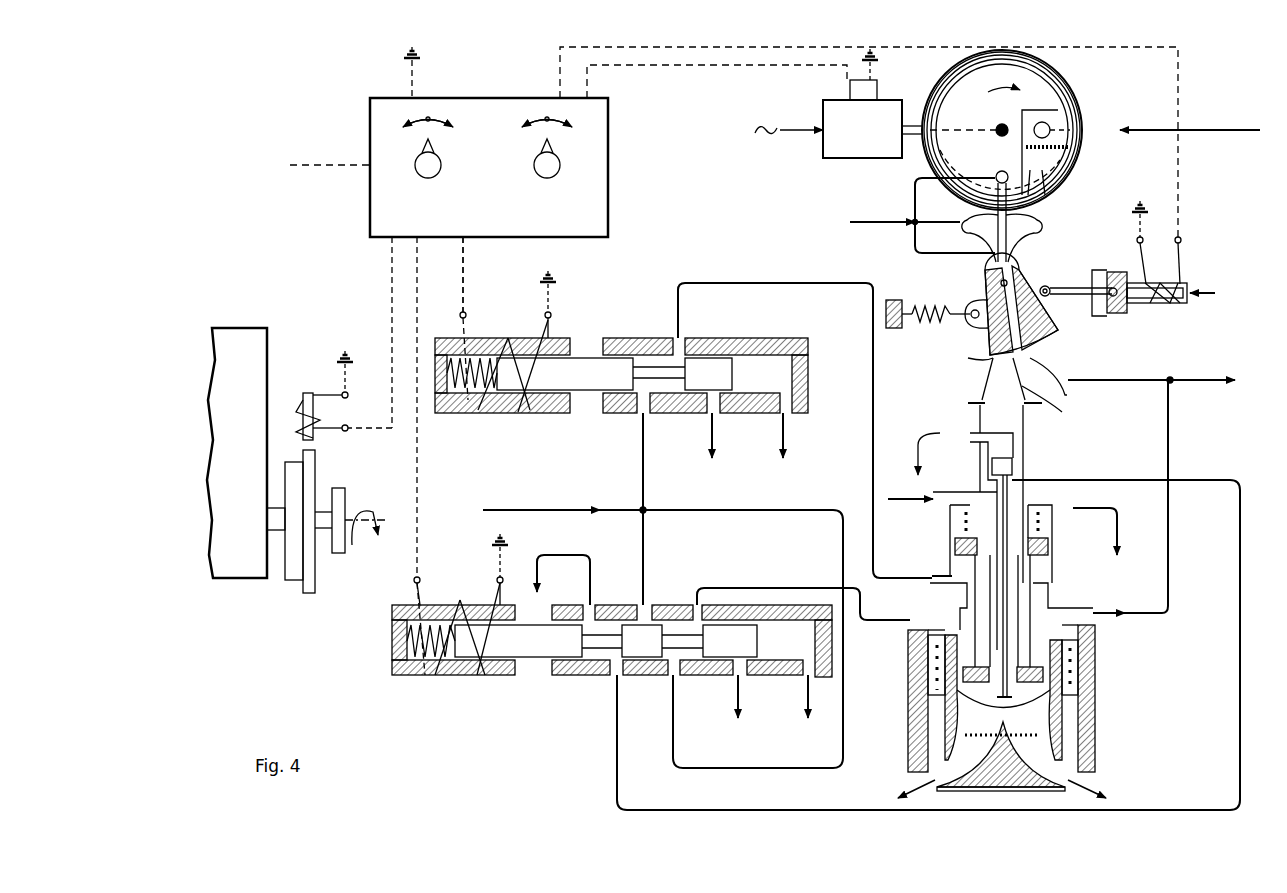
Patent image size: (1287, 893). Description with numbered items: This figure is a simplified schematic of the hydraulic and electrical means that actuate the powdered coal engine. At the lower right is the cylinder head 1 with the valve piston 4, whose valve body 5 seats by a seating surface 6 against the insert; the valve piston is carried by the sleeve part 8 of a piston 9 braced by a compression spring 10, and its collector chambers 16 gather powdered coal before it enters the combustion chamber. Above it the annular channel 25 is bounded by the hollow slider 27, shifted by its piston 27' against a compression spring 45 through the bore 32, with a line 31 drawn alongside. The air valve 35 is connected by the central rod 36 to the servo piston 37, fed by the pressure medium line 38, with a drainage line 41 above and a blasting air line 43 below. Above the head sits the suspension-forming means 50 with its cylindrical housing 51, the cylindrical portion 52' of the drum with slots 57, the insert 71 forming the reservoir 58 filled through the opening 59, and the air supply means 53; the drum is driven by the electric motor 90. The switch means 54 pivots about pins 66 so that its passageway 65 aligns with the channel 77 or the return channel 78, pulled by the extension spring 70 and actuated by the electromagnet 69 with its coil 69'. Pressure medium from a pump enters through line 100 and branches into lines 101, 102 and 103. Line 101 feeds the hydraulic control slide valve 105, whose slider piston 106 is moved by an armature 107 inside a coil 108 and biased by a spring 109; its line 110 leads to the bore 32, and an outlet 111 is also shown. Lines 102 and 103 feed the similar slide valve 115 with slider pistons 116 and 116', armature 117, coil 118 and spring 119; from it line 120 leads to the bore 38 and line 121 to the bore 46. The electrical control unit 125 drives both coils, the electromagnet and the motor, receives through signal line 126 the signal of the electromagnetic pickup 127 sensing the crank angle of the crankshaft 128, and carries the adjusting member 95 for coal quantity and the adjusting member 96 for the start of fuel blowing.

The cylinder head 1 is at (1097, 757).
The valve piston 4 is at (948, 790).
The valve body 5 is at (1003, 773).
The seating surface 6 is at (1072, 778).
The sleeve part 8 is at (1072, 685).
The piston 9 is at (1072, 642).
The compression spring 10 is at (1072, 665).
The chambers 16 is at (980, 727).
The annular channel 25 is at (1035, 597).
The hollow slider 27 is at (954, 602).
The piston 27' is at (1062, 549).
The pressure line 31 is at (1092, 612).
The bore 32 is at (940, 575).
The air valve 35 is at (1009, 695).
The central rod 36 is at (1000, 518).
The servo piston 37 is at (1014, 467).
The pressure medium line 38 is at (1036, 482).
The line 41 is at (968, 432).
The line 43 is at (955, 497).
The compression spring 45 is at (1054, 530).
The bore 46 is at (910, 630).
The suspension-forming means 50 is at (1062, 198).
The cylindrical housing 51 is at (1068, 88).
The cylindrical portion 52' is at (1028, 170).
The air supply means 53 is at (905, 212).
The switch means 54 is at (1060, 325).
The slots 57 is at (1039, 172).
The reservoir 58 is at (1060, 146).
The opening 59 is at (1052, 128).
The passageway 65 is at (985, 292).
The pins 66 is at (1010, 283).
The electromagnet 69 is at (1130, 258).
The coil 69' is at (1184, 307).
The extension spring 70 is at (928, 322).
The insert 71 is at (960, 80).
The channel 77 is at (990, 380).
The channel 78 is at (1072, 374).
The electric motor 90 is at (845, 158).
The adjusting member 95 is at (559, 175).
The adjusting member 96 is at (440, 175).
The line 100 is at (528, 510).
The line 101 is at (643, 465).
The line 102 is at (643, 535).
The line 103 is at (717, 508).
The hydraulic control slide valve 105 is at (712, 338).
The slider piston 106 is at (725, 385).
The armature 107 is at (580, 378).
The coil 108 is at (482, 400).
The spring 109 is at (462, 348).
The line 110 is at (678, 306).
The outlet 111 is at (712, 435).
The hydraulic slide valve 115 is at (762, 602).
The slider piston 116 is at (662, 664).
The slider piston 116' is at (746, 664).
The armature 117 is at (515, 662).
The coil 118 is at (450, 665).
The spring 119 is at (406, 606).
The line 120 is at (1126, 480).
The line 121 is at (742, 588).
The electrical control unit 125 is at (596, 212).
The signal line 126 is at (392, 258).
The electromagnetic pickup 127 is at (310, 396).
The crankshaft 128 is at (277, 530).